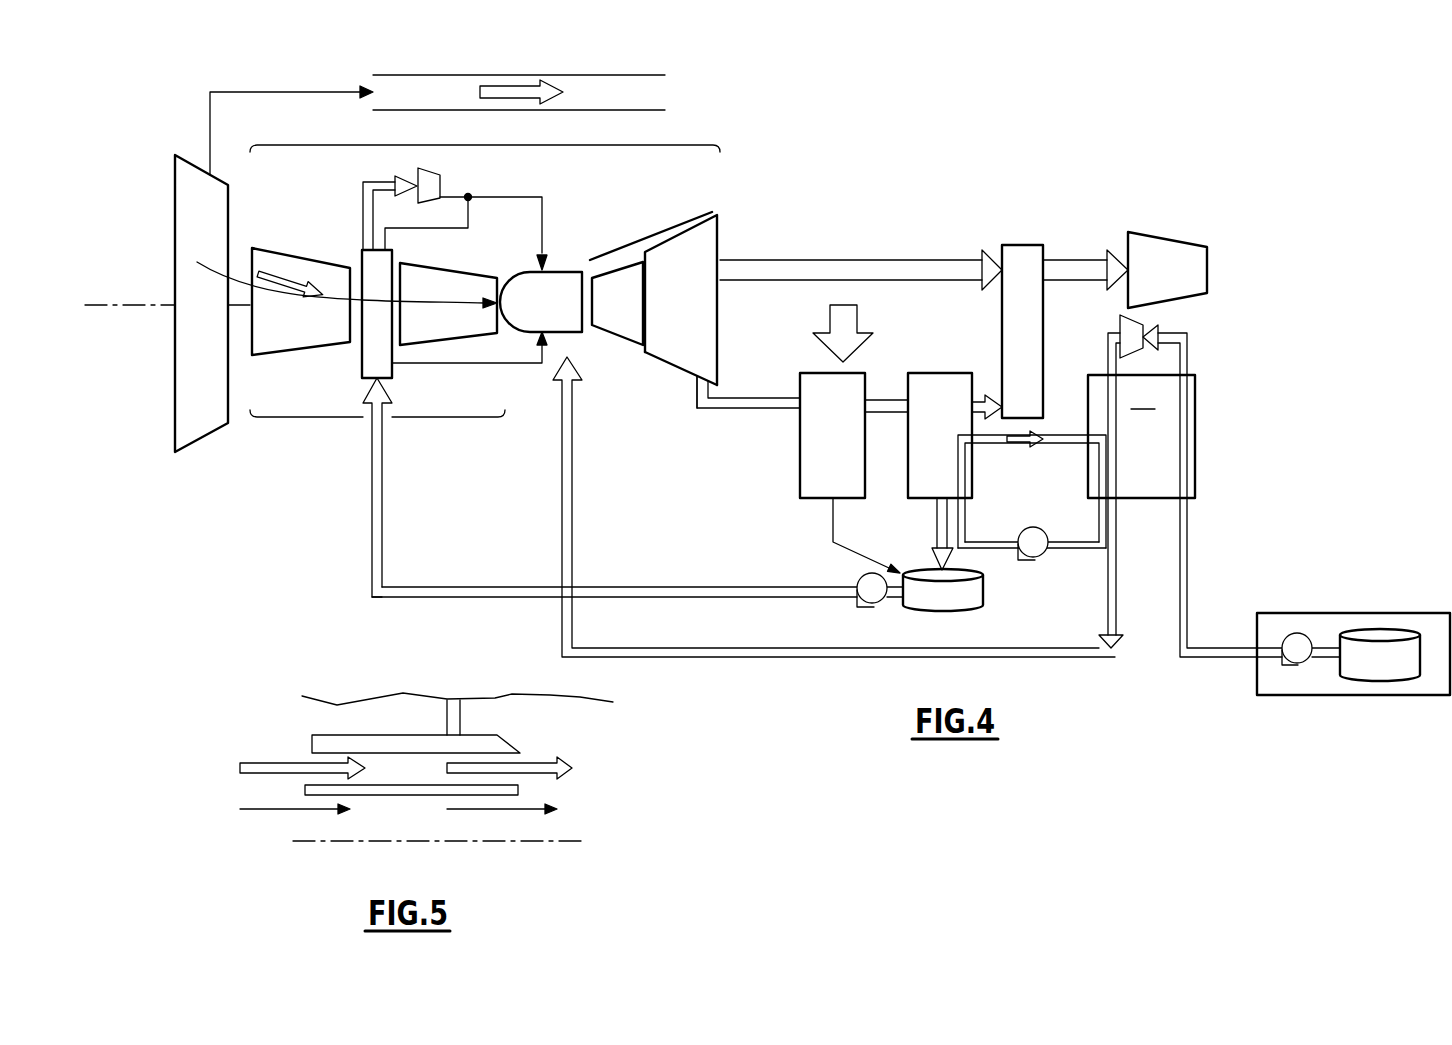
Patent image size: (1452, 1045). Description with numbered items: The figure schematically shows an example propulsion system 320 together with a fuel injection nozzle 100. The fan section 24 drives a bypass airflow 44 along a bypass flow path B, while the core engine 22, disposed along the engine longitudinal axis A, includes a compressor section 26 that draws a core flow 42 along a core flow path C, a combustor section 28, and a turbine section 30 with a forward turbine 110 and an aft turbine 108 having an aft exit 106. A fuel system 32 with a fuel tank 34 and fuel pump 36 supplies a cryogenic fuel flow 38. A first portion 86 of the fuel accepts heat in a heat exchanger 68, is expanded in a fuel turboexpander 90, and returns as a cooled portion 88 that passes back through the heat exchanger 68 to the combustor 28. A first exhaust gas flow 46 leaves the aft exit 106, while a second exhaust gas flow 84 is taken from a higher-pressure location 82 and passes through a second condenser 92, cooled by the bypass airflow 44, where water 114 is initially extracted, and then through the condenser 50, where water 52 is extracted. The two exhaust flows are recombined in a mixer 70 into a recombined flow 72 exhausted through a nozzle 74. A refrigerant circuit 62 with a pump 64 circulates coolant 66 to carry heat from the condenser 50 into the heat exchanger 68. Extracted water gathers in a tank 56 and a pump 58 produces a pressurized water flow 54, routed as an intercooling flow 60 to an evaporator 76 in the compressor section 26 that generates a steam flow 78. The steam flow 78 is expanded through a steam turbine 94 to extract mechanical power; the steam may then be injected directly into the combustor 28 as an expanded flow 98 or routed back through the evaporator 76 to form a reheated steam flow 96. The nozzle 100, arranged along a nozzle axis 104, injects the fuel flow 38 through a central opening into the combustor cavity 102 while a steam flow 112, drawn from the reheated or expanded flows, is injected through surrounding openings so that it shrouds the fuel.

In FIG. 4, the propulsion system 320 is at (1132, 124).
In FIG. 4, the core engine 22 is at (492, 145).
In FIG. 4, the fan section 24 is at (197, 437).
In FIG. 4, the compressor section 26 is at (318, 417).
In FIG. 4, the combustor section 28 is at (535, 288).
In FIG. 4, the turbine section 30 is at (642, 235).
In FIG. 4, the fuel system 32 is at (1352, 613).
In FIG. 4, the fuel tank 34 is at (1375, 676).
In FIG. 4, the fuel pump 36 is at (1299, 663).
In FIG. 4, the fuel flow 38 is at (562, 485).
In FIG. 5, the fuel flow 38 is at (270, 810).
In FIG. 4, the core flow 42 is at (300, 290).
In FIG. 4, the bypass airflow 44 is at (527, 75).
In FIG. 4, the first exhaust gas flow 46 is at (813, 260).
In FIG. 4, the condenser 50 is at (942, 373).
In FIG. 4, the water 52 is at (937, 517).
In FIG. 4, the water flow 54 is at (622, 587).
In FIG. 4, the tank 56 is at (967, 605).
In FIG. 4, the pump 58 is at (882, 604).
In FIG. 4, the intercooling flow 60 is at (382, 476).
In FIG. 4, the refrigerant circuit 62 is at (1067, 560).
In FIG. 4, the pump 64 is at (1033, 527).
In FIG. 4, the coolant 66 is at (1022, 444).
In FIG. 4, the heat exchanger 68 is at (1141, 436).
In FIG. 4, the mixer 70 is at (1013, 245).
In FIG. 4, the recombined flow 72 is at (1070, 260).
In FIG. 4, the nozzle 74 is at (1200, 247).
In FIG. 4, the evaporator 76 is at (362, 358).
In FIG. 4, the steam flow 78 is at (363, 214).
In FIG. 4, the location 82 is at (690, 384).
In FIG. 4, the second exhaust gas flow 84 is at (735, 409).
In FIG. 4, the first portion 86 is at (1187, 346).
In FIG. 4, the cooled portion 88 is at (1115, 513).
In FIG. 4, the fuel turboexpander 90 is at (1120, 320).
In FIG. 4, the second condenser 92 is at (800, 473).
In FIG. 4, the steam turbine 94 is at (437, 183).
In FIG. 4, the reheated steam flow 96 is at (502, 363).
In FIG. 4, the expanded flow 98 is at (525, 197).
In FIG. 5, the fuel injection nozzle 100 is at (338, 861).
In FIG. 5, the combustor cavity 102 is at (598, 735).
In FIG. 5, the nozzle axis 104 is at (507, 842).
In FIG. 4, the aft exit 106 is at (720, 317).
In FIG. 4, the aft turbine 108 is at (703, 247).
In FIG. 4, the forward turbine 110 is at (625, 327).
In FIG. 5, the steam flow 112 is at (267, 762).
In FIG. 4, the water 114 is at (830, 537).
In FIG. 4, the engine longitudinal axis A is at (130, 312).
In FIG. 4, the bypass flow path B is at (421, 75).
In FIG. 4, the core flow path C is at (346, 273).